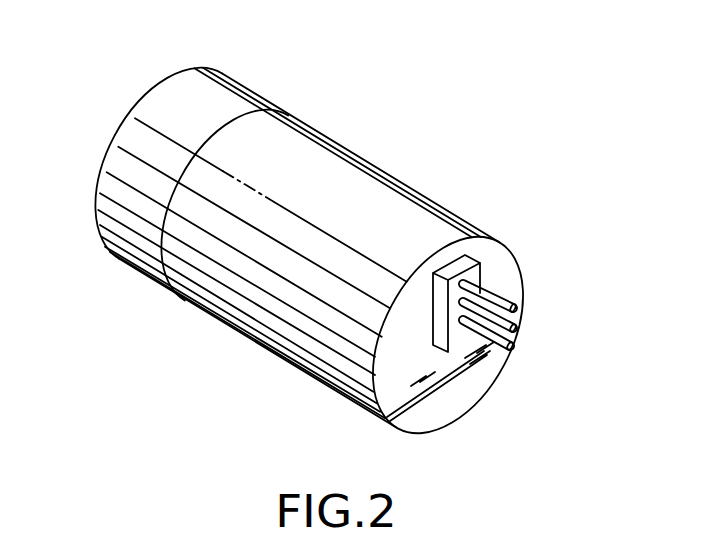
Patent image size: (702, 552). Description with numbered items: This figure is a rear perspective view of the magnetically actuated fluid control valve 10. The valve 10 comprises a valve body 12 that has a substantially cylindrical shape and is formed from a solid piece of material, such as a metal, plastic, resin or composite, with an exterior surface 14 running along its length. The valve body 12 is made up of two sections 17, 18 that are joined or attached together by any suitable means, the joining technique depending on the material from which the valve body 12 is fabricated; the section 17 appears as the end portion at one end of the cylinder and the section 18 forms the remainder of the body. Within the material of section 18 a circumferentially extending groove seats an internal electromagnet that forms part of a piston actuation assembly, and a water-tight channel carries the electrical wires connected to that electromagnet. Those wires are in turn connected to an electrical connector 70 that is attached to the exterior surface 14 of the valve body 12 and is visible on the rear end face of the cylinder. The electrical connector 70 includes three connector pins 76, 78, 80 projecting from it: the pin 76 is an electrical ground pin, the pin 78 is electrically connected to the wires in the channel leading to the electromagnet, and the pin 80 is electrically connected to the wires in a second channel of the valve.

The magnetically actuated fluid control valve 10 is at (470, 88).
The valve body 12 is at (373, 165).
The exterior surface 14 is at (432, 225).
The section 17 is at (122, 262).
The section 18 is at (243, 337).
The electrical connector 70 is at (455, 342).
The connector pin 76 is at (502, 340).
The connector pin 78 is at (500, 322).
The connector pin 80 is at (495, 303).